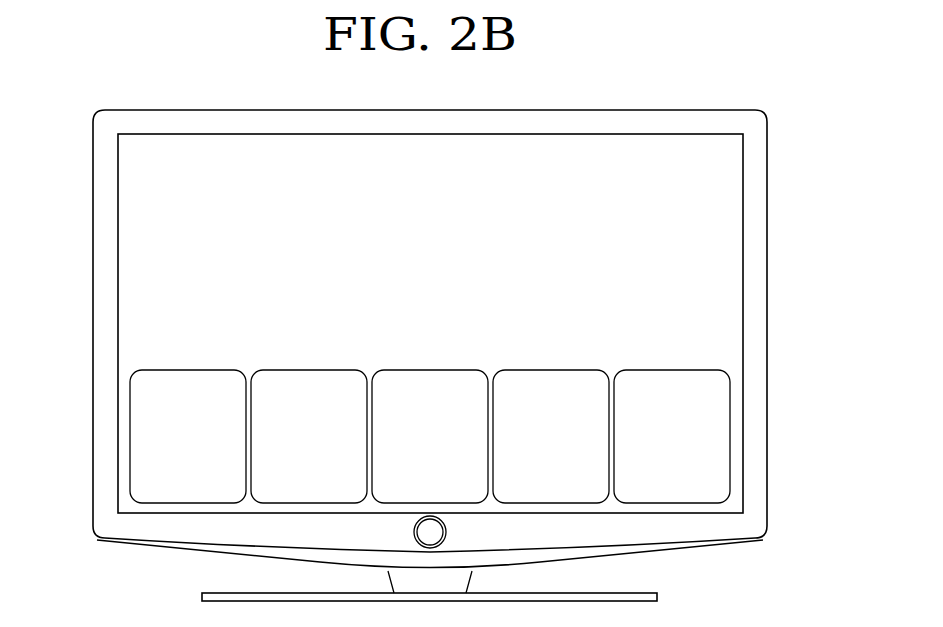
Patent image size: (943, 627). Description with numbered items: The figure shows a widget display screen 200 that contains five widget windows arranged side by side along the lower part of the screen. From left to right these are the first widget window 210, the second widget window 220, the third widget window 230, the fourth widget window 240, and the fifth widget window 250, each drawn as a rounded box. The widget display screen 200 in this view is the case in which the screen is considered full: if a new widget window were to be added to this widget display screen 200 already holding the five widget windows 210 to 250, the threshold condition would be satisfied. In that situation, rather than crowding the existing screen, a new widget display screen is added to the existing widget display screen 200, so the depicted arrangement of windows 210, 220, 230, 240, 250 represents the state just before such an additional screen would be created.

The widget display screen 200 is at (684, 134).
The widget window 1 210 is at (130, 372).
The widget window 2 220 is at (331, 370).
The widget window 3 230 is at (451, 370).
The widget window 4 240 is at (572, 370).
The widget window 5 250 is at (730, 372).